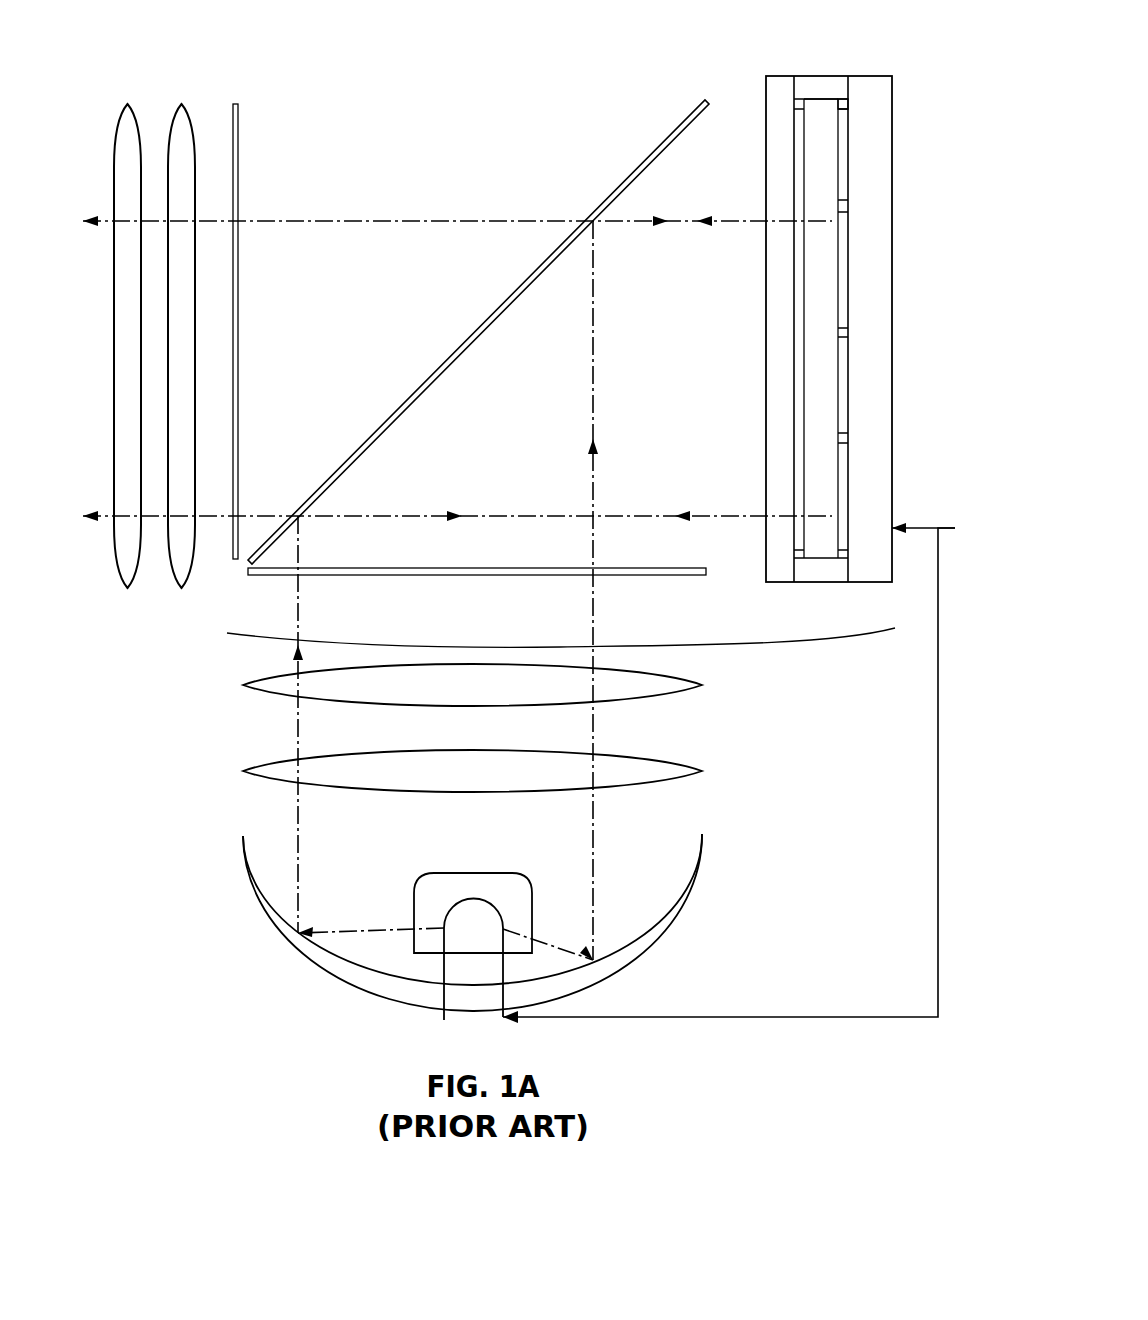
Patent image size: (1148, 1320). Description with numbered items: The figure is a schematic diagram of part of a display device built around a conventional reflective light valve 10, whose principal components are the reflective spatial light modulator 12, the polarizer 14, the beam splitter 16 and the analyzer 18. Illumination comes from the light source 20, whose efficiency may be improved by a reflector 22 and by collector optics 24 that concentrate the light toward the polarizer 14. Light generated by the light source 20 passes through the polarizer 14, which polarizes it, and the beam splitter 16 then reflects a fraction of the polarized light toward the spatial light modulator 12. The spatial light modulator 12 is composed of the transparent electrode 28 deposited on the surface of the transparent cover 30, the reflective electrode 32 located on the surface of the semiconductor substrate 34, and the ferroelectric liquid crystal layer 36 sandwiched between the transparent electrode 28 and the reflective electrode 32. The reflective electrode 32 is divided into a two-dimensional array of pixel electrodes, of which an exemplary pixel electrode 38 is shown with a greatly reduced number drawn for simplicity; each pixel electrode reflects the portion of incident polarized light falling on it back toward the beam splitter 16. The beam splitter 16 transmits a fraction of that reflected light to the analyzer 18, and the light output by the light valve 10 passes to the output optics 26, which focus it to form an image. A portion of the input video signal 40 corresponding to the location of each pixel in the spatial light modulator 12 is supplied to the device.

The reflective light valve 10 is at (557, 650).
The reflective spatial light modulator 12 is at (893, 165).
The polarizer 14 is at (282, 577).
The beam splitter 16 is at (606, 202).
The analyzer 18 is at (238, 158).
The light source 20 is at (533, 888).
The reflector 22 is at (688, 897).
The collector optics 24 is at (713, 795).
The output optics 26 is at (103, 580).
The transparent electrode 28 is at (795, 460).
The transparent cover 30 is at (777, 353).
The reflective electrode 32 is at (842, 103).
The semiconductor substrate 34 is at (880, 465).
The ferroelectric liquid crystal layer 36 is at (821, 108).
The pixel electrode 38 is at (842, 297).
The input video signal 40 is at (948, 528).